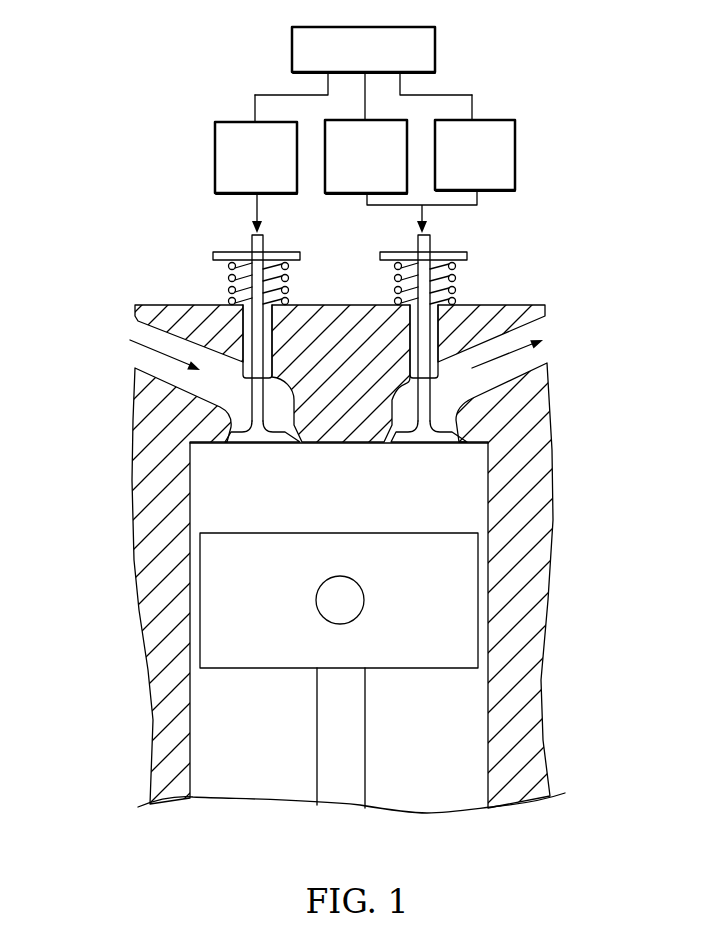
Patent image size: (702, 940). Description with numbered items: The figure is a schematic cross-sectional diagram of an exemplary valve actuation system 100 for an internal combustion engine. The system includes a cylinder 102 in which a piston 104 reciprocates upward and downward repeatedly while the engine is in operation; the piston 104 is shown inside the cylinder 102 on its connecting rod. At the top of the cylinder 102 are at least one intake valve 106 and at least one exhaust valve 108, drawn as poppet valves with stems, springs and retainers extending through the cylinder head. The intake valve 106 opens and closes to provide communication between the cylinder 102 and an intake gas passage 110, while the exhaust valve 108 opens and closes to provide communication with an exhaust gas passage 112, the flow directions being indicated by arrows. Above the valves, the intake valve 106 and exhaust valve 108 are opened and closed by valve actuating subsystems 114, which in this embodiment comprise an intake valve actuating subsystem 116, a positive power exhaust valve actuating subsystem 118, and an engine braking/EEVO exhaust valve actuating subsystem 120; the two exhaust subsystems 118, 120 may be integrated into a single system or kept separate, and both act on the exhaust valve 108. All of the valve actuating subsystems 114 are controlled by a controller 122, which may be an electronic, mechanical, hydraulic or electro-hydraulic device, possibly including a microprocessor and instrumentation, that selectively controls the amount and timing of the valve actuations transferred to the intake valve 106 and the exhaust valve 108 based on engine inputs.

The valve actuation system 100 is at (108, 136).
The cylinder 102 is at (234, 788).
The piston 104 is at (340, 533).
The intake valve 106 is at (266, 444).
The exhaust valve 108 is at (413, 444).
The intake gas passage 110 is at (142, 350).
The exhaust gas passage 112 is at (532, 346).
The valve actuating subsystems 114 is at (403, 152).
The intake valve actuating subsystem 116 is at (273, 169).
The positive power exhaust valve actuating subsystem 118 is at (382, 169).
The engine braking/EEVO exhaust valve actuating subsystem 120 is at (493, 166).
The controller 122 is at (380, 57).